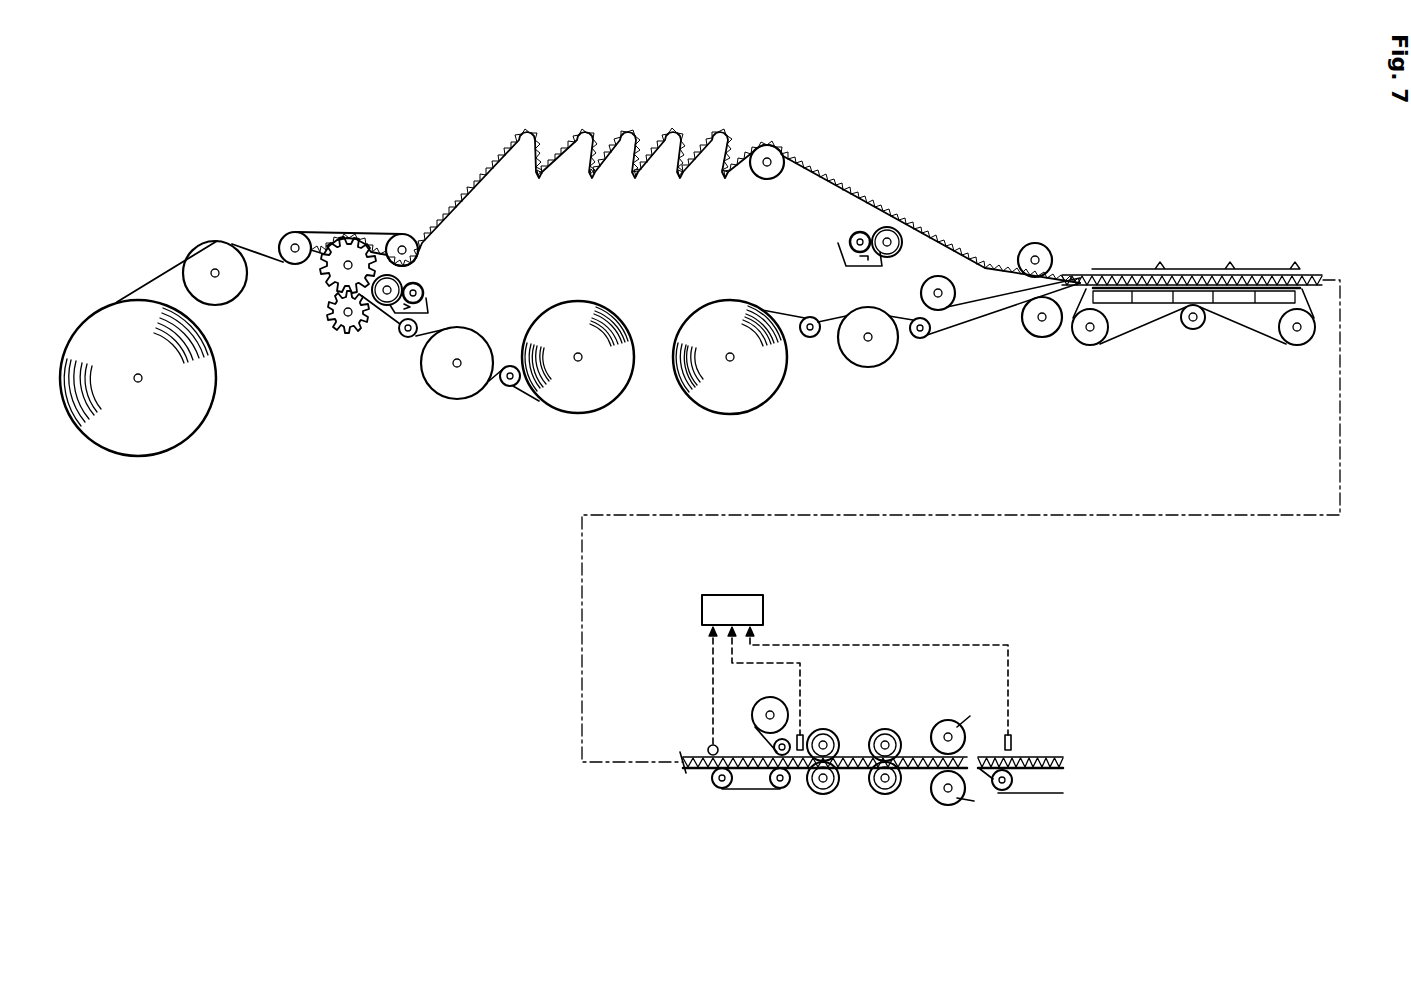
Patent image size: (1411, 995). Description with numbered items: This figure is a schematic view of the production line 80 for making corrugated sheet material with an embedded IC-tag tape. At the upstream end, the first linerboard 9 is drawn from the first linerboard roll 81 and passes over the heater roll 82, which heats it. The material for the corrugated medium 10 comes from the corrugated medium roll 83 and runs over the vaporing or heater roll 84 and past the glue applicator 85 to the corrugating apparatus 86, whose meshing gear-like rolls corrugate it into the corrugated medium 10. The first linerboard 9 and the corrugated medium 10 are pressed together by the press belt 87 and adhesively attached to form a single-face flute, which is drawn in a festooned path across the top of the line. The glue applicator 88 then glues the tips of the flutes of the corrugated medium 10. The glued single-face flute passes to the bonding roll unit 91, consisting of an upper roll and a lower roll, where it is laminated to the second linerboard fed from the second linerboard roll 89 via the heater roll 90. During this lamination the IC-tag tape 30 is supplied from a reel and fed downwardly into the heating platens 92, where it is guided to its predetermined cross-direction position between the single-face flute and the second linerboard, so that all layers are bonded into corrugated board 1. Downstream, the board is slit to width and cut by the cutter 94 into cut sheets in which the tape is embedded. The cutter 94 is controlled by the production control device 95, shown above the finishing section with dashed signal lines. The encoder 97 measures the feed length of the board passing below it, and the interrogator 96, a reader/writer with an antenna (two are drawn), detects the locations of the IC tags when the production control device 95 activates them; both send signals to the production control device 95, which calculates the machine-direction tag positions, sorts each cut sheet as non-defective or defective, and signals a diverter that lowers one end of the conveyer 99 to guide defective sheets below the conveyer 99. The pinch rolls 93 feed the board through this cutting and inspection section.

The absorbent article / composite sheet 1 is at (920, 290).
The first linerboard 9 is at (152, 272).
The corrugated medium 10 is at (527, 400).
The IC-tag tape 30 is at (985, 300).
The production line 80 is at (806, 150).
The first linerboard roll 81 is at (205, 425).
The heater roll 82 is at (240, 298).
The corrugated medium roll 83 is at (616, 405).
The vaporing or heater roll 84 is at (450, 400).
The glue applicator 85 is at (342, 335).
The corrugating apparatus 86 is at (428, 306).
The press belt 87 is at (385, 237).
The glue applicator 88 is at (838, 258).
The second linerboard roll 89 is at (775, 392).
The heater roll 90 is at (884, 365).
The bonding roll unit 91 is at (1050, 248).
The heating platens 92 is at (1198, 268).
The pinch rollers 93 is at (880, 795).
The cutter 94 is at (948, 805).
The production control device 95 is at (732, 592).
The interrogator 96 is at (803, 733).
The encoder 97 is at (708, 745).
The conveyer 99 is at (1045, 795).